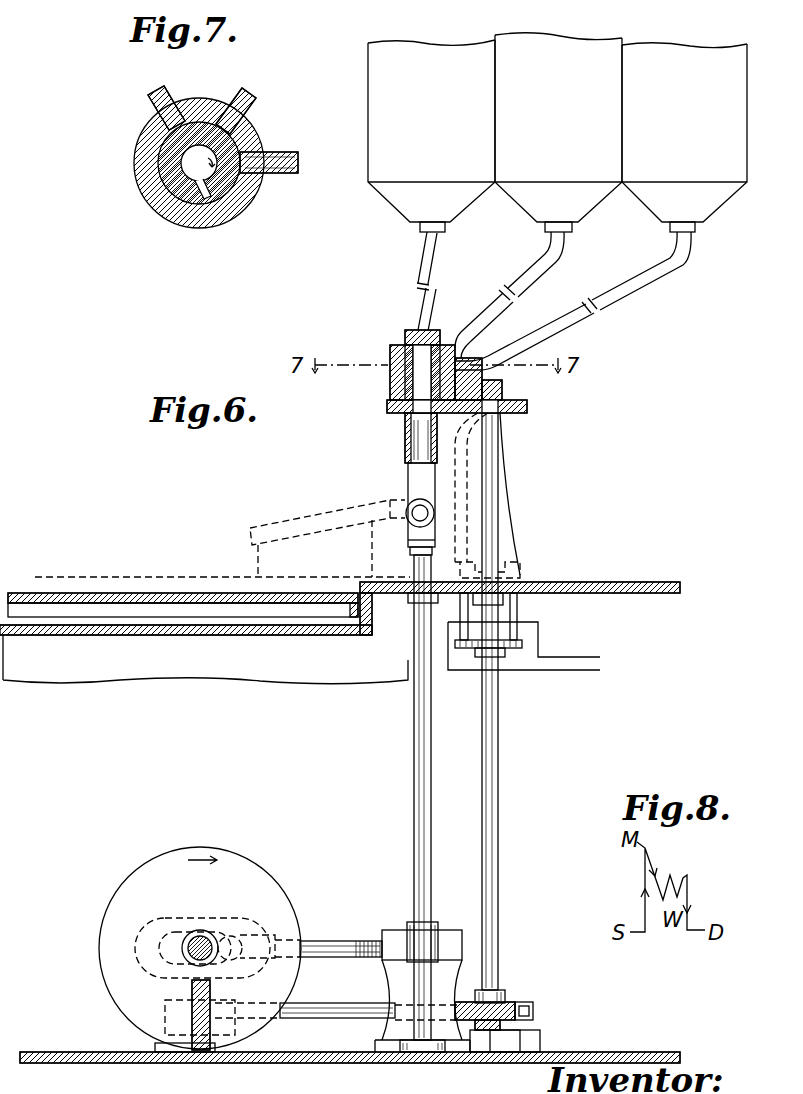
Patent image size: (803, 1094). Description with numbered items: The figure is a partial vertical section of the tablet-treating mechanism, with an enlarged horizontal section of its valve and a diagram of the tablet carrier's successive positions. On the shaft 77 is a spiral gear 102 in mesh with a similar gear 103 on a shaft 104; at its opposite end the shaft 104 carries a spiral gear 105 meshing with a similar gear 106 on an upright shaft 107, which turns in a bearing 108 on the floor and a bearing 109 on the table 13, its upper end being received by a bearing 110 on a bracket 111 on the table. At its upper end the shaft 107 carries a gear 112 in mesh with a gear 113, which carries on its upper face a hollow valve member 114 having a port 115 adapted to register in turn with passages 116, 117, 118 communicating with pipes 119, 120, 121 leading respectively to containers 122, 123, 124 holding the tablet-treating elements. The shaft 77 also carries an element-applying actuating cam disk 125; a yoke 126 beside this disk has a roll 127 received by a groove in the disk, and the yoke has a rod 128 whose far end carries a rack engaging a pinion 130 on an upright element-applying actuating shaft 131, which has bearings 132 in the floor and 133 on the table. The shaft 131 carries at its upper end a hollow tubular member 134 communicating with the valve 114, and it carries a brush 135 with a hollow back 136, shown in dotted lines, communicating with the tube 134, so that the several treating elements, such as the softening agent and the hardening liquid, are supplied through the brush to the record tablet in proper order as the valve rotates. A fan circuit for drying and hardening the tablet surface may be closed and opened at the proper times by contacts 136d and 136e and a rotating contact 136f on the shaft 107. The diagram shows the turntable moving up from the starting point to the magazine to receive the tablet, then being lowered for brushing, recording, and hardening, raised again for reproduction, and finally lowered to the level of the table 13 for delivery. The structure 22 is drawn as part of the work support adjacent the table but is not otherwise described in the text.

In FIG. 6, the table 13 is at (618, 587).
In FIG. 6, the work support / slide 22 is at (175, 604).
In FIG. 6, the shaft 77 is at (206, 940).
In FIG. 6, the spiral gear 102 is at (196, 918).
In FIG. 6, the spiral gear 103 is at (192, 990).
In FIG. 6, the shaft 104 is at (295, 1018).
In FIG. 6, the spiral gear 105 is at (498, 988).
In FIG. 6, the spiral gear 106 is at (510, 1004).
In FIG. 6, the upright shaft 107 is at (492, 785).
In FIG. 6, the bearing 108 is at (536, 1050).
In FIG. 6, the bearing 109 is at (503, 590).
In FIG. 6, the bearing 110 is at (504, 386).
In FIG. 7, the bracket 111 is at (160, 200).
In FIG. 6, the bracket 111 is at (392, 350).
In FIG. 6, the gear 112 is at (510, 413).
In FIG. 6, the gear 113 is at (400, 413).
In FIG. 7, the hollow valve member 114 is at (226, 189).
In FIG. 6, the hollow valve member 114 is at (392, 378).
In FIG. 7, the port 115 is at (206, 200).
In FIG. 7, the passage 116 is at (253, 180).
In FIG. 7, the passage 117 is at (238, 135).
In FIG. 7, the passage 118 is at (170, 130).
In FIG. 7, the pipe 119 is at (290, 160).
In FIG. 6, the pipe 119 is at (640, 273).
In FIG. 7, the pipe 120 is at (246, 90).
In FIG. 6, the pipe 120 is at (548, 258).
In FIG. 7, the pipe 121 is at (152, 78).
In FIG. 6, the pipe 121 is at (433, 254).
In FIG. 6, the container 122 is at (684, 137).
In FIG. 6, the container 123 is at (558, 132).
In FIG. 6, the container 124 is at (431, 136).
In FIG. 6, the element-applying actuating cam disk 125 is at (255, 870).
In FIG. 6, the yoke 126 is at (140, 947).
In FIG. 6, the roll 127 is at (236, 958).
In FIG. 6, the rod 128 is at (330, 950).
In FIG. 6, the pinion 130 is at (432, 945).
In FIG. 6, the upright element-applying actuating shaft 131 is at (416, 798).
In FIG. 6, the bearing 132 is at (398, 1046).
In FIG. 6, the bearing 133 is at (410, 600).
In FIG. 6, the hollow tubular member 134 is at (405, 455).
In FIG. 6, the brush 135 is at (258, 557).
In FIG. 6, the hollow back 136 is at (318, 522).
In FIG. 6, the contact 136d is at (519, 609).
In FIG. 6, the contact 136e is at (462, 609).
In FIG. 6, the rotating contact 136f is at (500, 646).